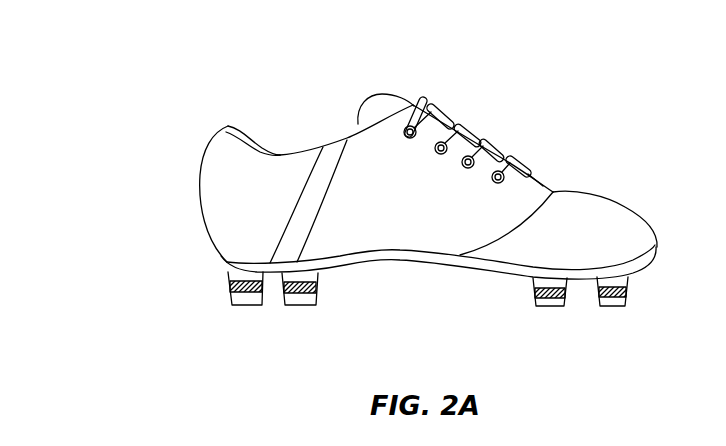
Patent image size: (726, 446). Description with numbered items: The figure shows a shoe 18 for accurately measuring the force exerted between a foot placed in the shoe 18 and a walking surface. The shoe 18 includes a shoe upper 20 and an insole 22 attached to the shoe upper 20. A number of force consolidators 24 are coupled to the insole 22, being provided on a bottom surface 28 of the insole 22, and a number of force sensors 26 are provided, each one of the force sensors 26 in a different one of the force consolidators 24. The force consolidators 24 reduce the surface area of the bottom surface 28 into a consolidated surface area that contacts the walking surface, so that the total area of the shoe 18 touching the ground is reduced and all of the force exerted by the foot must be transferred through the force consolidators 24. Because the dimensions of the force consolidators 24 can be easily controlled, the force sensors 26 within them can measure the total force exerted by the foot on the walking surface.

The shoe 18 is at (533, 75).
The shoe upper 20 is at (593, 193).
The insole 22 is at (442, 263).
The force consolidators 24 is at (250, 312).
The force sensors 26 is at (230, 286).
The bottom surface 28 is at (390, 270).